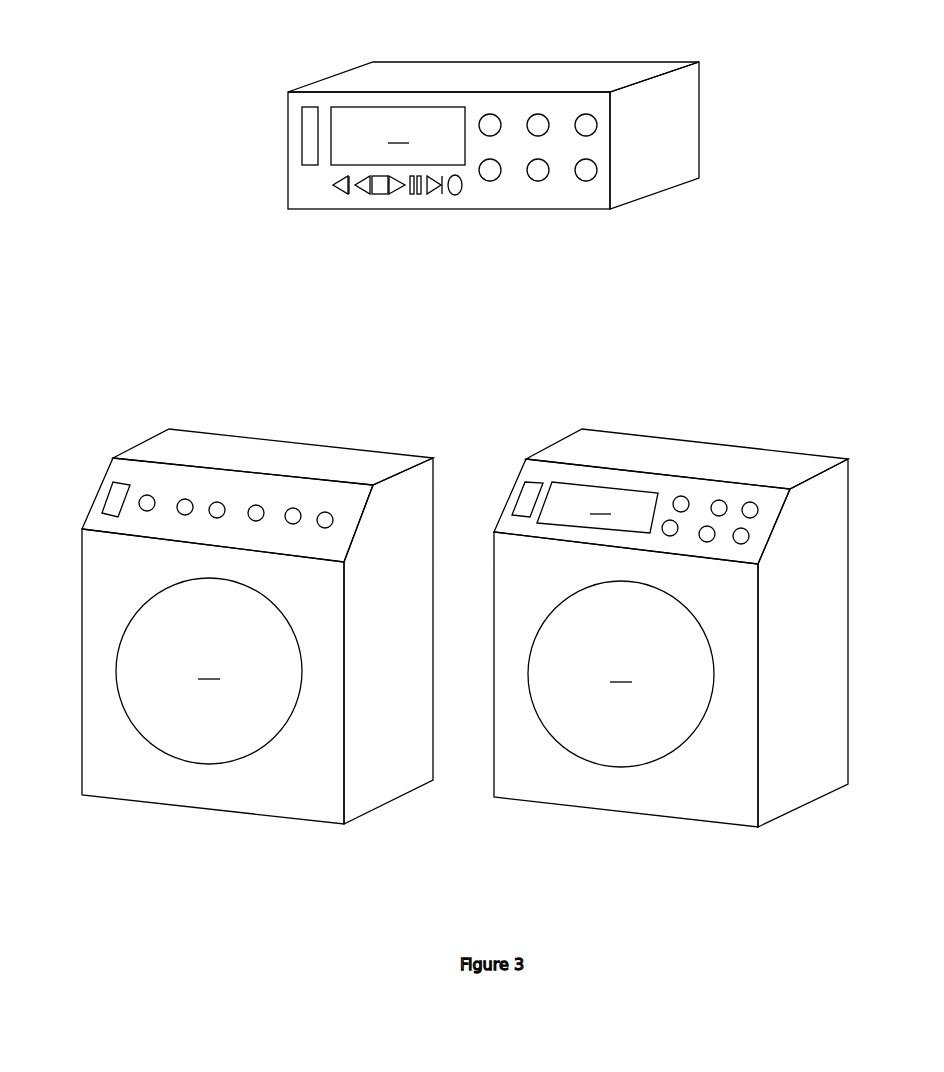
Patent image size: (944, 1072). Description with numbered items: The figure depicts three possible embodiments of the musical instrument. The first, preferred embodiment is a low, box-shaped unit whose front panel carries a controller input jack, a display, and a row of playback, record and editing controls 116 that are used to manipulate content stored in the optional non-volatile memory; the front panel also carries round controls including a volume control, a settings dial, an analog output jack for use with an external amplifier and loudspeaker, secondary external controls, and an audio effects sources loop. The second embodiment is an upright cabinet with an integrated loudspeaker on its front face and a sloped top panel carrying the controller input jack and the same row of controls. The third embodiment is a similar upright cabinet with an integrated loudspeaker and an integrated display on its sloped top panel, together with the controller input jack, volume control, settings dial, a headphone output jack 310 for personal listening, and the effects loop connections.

The playback, record and editing controls 116 is at (391, 193).
The headphone output jack 310 is at (721, 500).